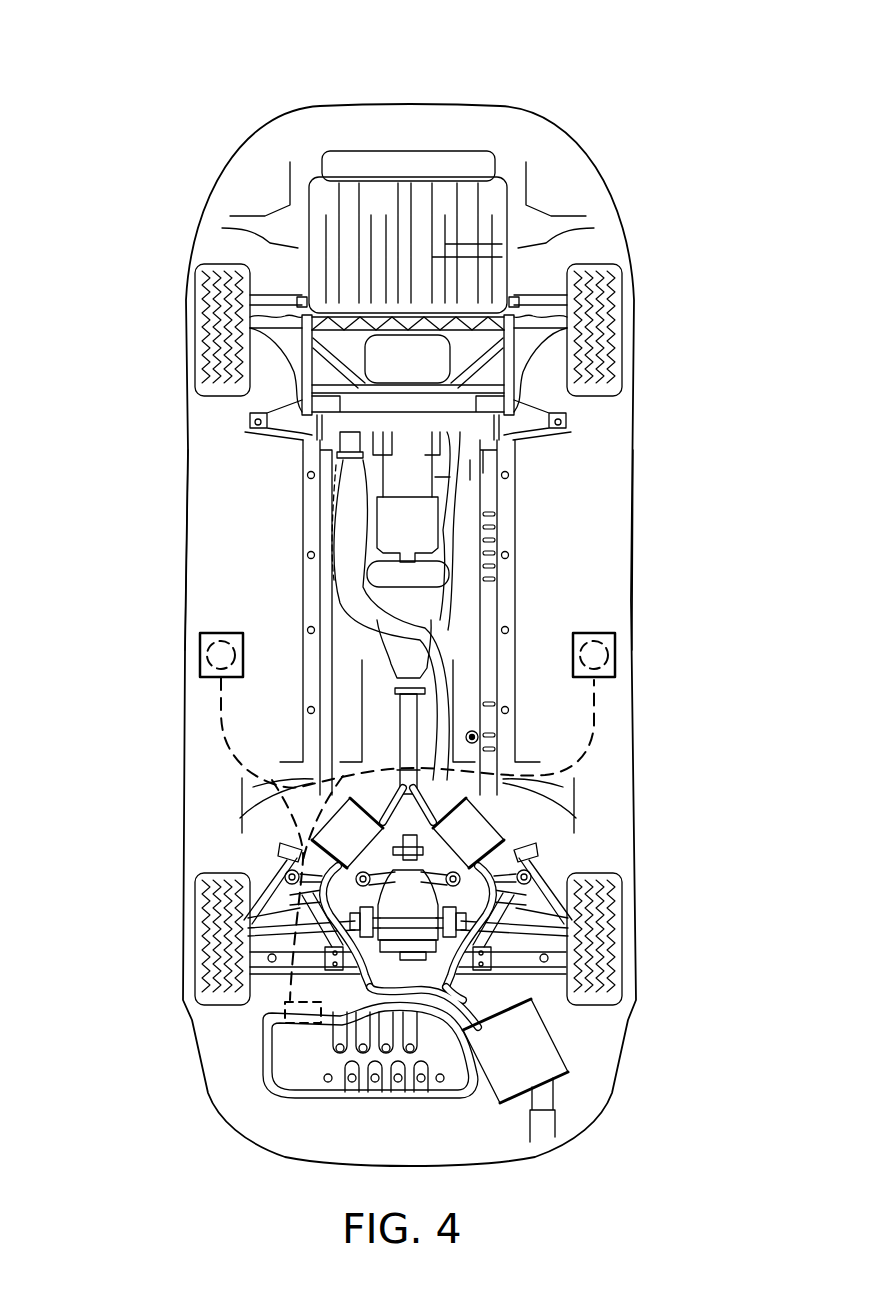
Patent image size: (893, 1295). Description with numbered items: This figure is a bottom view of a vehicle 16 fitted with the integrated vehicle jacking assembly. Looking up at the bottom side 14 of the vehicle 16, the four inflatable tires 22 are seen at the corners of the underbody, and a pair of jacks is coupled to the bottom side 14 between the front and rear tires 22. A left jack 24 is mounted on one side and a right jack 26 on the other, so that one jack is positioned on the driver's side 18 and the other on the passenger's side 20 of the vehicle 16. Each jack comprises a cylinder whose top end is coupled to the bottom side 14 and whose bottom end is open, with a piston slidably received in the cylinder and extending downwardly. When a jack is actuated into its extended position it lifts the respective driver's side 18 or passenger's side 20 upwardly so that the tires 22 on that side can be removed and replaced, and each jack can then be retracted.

The bottom side 14 is at (212, 452).
The vehicle 16 is at (466, 105).
The driver's side 18 is at (632, 560).
The passenger's side 20 is at (173, 648).
The tires 22 is at (200, 262).
The left jack 24 is at (615, 633).
The right jack 26 is at (200, 675).